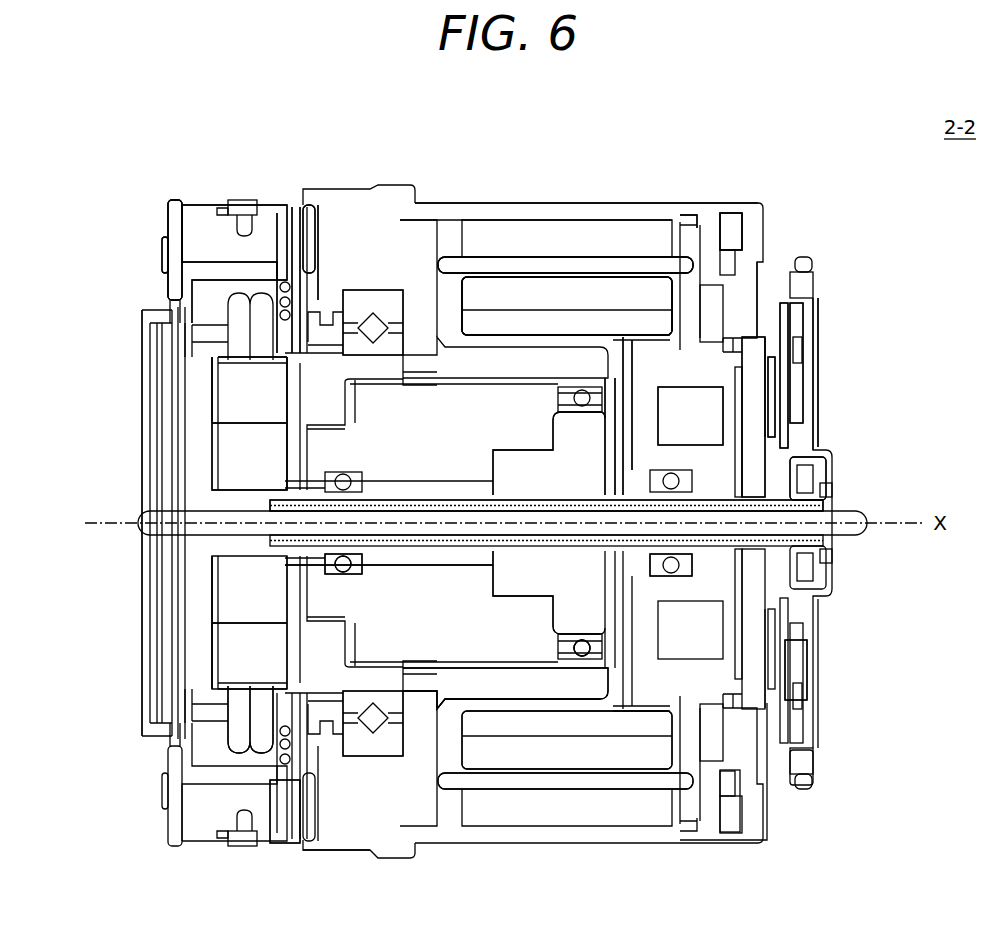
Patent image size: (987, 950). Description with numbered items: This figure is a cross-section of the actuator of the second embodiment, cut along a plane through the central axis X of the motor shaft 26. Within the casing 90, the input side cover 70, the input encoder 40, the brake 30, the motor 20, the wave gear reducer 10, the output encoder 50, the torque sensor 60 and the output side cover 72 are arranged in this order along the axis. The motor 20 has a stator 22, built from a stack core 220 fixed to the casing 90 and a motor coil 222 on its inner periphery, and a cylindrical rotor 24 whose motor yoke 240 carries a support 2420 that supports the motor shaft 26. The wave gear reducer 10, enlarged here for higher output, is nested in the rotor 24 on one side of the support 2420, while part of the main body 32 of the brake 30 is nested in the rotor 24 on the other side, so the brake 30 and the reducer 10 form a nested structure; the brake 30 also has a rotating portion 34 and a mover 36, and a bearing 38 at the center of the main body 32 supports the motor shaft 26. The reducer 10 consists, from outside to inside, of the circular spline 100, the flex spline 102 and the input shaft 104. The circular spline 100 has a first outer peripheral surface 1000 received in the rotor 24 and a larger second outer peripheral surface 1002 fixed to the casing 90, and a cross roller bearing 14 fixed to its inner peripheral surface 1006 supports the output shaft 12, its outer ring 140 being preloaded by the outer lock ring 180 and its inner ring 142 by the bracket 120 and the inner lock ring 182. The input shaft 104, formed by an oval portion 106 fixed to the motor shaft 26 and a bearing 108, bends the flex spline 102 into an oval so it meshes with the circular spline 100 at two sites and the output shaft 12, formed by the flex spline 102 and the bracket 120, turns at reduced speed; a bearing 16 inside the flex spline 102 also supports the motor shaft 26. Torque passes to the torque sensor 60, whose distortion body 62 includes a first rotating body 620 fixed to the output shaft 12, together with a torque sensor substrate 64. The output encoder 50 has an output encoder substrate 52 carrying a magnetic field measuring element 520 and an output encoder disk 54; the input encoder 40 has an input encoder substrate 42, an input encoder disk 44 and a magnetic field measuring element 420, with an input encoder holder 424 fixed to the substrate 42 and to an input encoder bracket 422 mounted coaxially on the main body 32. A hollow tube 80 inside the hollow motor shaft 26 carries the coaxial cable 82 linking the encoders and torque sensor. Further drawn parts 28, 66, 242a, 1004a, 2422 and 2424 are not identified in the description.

The wave gear reducer 10 is at (410, 186).
The output shaft 12 is at (274, 426).
The cross roller bearing 14 is at (369, 274).
The bearing 16 is at (320, 567).
The motor 20 is at (585, 143).
The stator 22 is at (530, 207).
The rotor 24 is at (570, 265).
The motor shaft 26 is at (785, 488).
The retainer 28 is at (732, 823).
The brake 30 is at (695, 143).
The main body 32 is at (712, 270).
The rotating portion 34 is at (774, 318).
The mover 36 is at (741, 318).
The bearing 38 is at (745, 567).
The input encoder 40 is at (880, 308).
The input encoder substrate 42 is at (804, 326).
The input encoder disk 44 is at (787, 371).
The output encoder 50 is at (272, 143).
The output encoder substrate 52 is at (292, 292).
The output encoder disk 54 is at (316, 283).
The torque sensor 60 is at (228, 143).
The torque sensor distortion body 62 is at (204, 194).
The torque sensor substrate 64 is at (163, 255).
The cover wall 66 is at (176, 189).
The input side cover 70 is at (834, 408).
The output side cover 72 is at (124, 457).
The hollow tube 80 is at (798, 502).
The coaxial cable 82 is at (857, 532).
The casing 90 is at (458, 232).
The circular spline 100 is at (596, 352).
The flex spline 102 is at (387, 642).
The input shaft 104 is at (497, 888).
The oval portion 106 is at (523, 600).
The bearing 108 is at (580, 656).
The bracket 120 is at (345, 372).
The outer ring 140 is at (355, 318).
The inner ring 142 is at (350, 342).
The outer lock ring 180 is at (332, 770).
The inner lock ring 182 is at (303, 675).
The stack core 220 is at (477, 235).
The motor coil 222 is at (503, 262).
The motor yoke 240 is at (645, 722).
The yoke portion 242a is at (606, 757).
The magnetic field measuring element 420 is at (802, 664).
The input encoder bracket 422 is at (810, 765).
The input encoder holder 424 is at (758, 808).
The magnetic field measuring element 520 is at (285, 803).
The first rotating body 620 is at (237, 730).
The first outer peripheral surface 1000 is at (488, 700).
The second outer peripheral surface 1002 is at (445, 770).
The rotor frame portion 1004a is at (455, 795).
The inner peripheral surface 1006 is at (388, 757).
The support 2420 is at (700, 432).
The rotor core plate 2422 is at (618, 332).
The rotor core 2424 is at (659, 330).